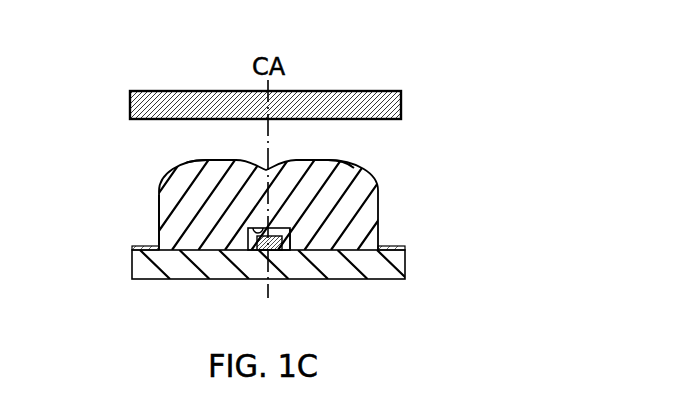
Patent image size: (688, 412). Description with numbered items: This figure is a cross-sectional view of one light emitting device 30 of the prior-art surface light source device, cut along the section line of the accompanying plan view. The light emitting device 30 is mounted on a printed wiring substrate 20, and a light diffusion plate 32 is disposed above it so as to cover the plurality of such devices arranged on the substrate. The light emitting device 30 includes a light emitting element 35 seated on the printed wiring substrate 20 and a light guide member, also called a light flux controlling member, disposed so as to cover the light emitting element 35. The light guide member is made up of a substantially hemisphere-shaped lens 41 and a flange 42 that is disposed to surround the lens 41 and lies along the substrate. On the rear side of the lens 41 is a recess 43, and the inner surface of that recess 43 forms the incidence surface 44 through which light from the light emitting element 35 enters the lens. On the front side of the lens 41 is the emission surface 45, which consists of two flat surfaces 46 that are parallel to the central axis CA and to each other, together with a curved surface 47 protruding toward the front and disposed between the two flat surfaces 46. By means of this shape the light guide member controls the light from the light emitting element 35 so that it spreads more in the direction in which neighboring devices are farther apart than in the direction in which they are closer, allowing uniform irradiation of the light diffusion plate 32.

The light emitting device 30 is at (495, 123).
The light diffusion plate 32 is at (130, 114).
The printed wiring substrate 20 is at (405, 264).
The flange 42 is at (389, 246).
The lens 41 is at (366, 174).
The flat surface 46 is at (159, 208).
The emission surface 45 is at (201, 161).
The curved surface 47 is at (325, 161).
The recess 43 is at (256, 229).
The light emitting element 35 is at (257, 251).
The incidence surface 44 is at (289, 232).